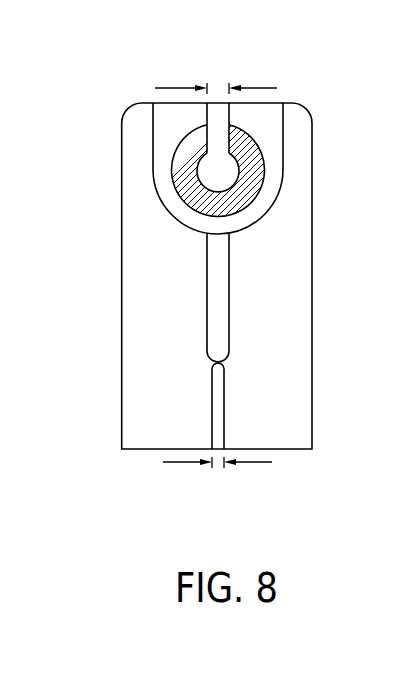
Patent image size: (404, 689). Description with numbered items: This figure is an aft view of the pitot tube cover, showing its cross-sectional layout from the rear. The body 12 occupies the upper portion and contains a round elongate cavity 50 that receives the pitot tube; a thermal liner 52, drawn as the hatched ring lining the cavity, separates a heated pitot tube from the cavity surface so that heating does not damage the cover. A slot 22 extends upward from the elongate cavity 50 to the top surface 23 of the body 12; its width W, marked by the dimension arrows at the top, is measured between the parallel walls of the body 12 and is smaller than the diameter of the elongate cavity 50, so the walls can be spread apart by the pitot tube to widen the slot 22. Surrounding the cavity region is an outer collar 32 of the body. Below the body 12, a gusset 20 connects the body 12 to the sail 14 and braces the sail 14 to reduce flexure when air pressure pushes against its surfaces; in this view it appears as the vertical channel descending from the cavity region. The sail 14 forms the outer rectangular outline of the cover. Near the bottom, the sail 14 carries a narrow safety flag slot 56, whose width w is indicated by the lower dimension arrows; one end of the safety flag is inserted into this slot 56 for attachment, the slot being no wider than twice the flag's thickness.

The body 12 is at (286, 155).
The sail 14 is at (121, 323).
The gusset 20 is at (222, 297).
The slot 22 is at (219, 125).
The top surface 23 is at (159, 103).
The collar 32 is at (277, 196).
The elongate cavity 50 is at (204, 168).
The thermal liner 52 is at (200, 221).
The safety flag slot 56 is at (218, 384).